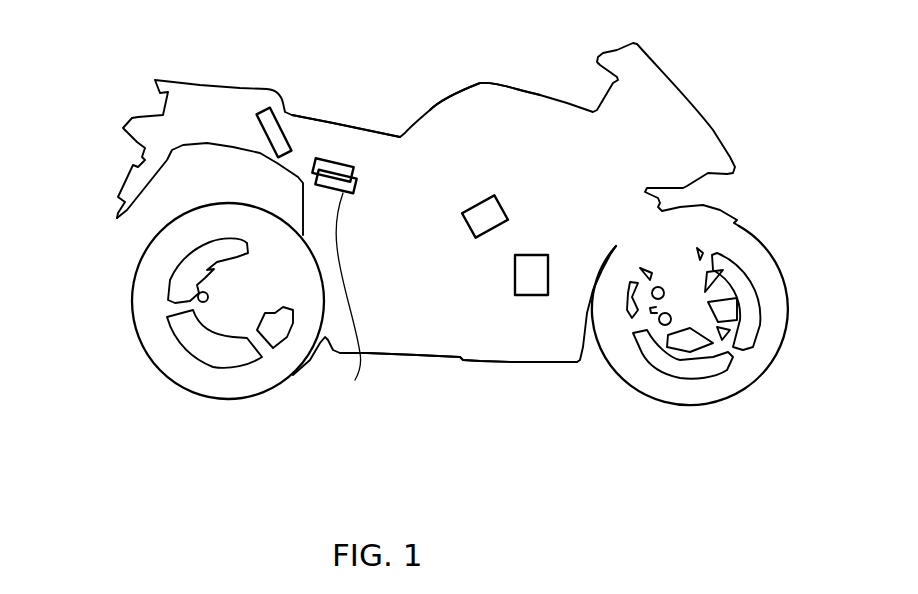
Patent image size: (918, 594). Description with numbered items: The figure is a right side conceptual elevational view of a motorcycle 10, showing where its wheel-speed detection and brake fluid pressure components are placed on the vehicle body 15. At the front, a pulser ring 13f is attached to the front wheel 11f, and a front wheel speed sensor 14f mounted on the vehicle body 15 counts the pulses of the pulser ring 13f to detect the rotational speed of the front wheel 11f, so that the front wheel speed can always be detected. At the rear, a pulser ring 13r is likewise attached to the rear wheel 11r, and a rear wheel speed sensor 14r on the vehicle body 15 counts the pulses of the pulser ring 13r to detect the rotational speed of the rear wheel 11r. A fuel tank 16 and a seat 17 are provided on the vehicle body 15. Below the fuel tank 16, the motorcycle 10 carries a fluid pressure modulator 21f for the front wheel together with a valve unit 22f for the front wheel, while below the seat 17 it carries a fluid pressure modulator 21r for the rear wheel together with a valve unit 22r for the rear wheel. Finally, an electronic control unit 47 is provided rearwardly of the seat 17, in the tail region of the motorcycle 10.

The motorcycle 10 is at (438, 371).
The rear wheel 11r is at (172, 372).
The front wheel 11f is at (750, 370).
The pulser ring 13r is at (228, 333).
The pulser ring 13f is at (692, 327).
The rear wheel speed sensor 14r is at (198, 293).
The front wheel speed sensor 14f is at (665, 325).
The vehicle body 15 is at (488, 343).
The fuel tank 16 is at (500, 98).
The seat 17 is at (323, 130).
The fluid pressure modulator for the rear wheel 21r is at (350, 303).
The fluid pressure modulator for the front wheel 21f is at (533, 295).
The valve unit for the rear wheel 22r is at (340, 163).
The valve unit for the front wheel 22f is at (480, 200).
The electronic control unit 47 is at (260, 130).